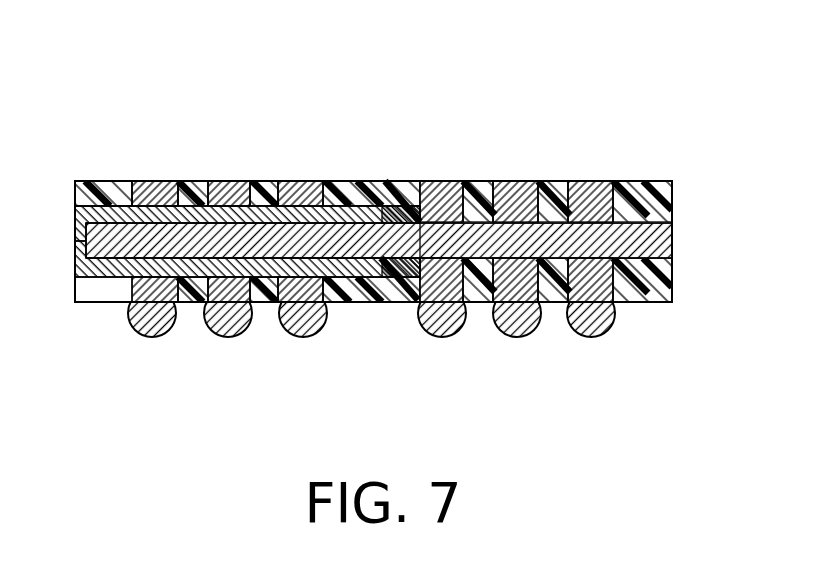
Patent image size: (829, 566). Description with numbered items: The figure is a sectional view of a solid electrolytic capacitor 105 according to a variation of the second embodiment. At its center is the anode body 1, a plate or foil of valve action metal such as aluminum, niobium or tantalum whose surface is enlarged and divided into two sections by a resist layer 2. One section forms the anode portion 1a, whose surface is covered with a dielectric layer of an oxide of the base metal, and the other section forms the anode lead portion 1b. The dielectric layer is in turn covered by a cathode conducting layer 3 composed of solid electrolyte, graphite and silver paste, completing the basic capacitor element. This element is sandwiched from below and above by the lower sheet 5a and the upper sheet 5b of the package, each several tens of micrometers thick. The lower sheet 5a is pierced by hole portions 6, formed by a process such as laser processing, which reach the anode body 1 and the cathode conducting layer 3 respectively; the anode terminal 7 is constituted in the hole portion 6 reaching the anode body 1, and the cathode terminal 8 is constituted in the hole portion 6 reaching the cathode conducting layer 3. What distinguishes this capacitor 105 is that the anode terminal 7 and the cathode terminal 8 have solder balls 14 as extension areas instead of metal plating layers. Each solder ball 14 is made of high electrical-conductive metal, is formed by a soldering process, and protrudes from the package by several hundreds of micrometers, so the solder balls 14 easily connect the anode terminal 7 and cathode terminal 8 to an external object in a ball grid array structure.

The solid electrolytic capacitor 105 is at (460, 107).
The anode body 1 is at (372, 238).
The anode portion 1a is at (107, 262).
The anode lead portion 1b is at (637, 240).
The resist layer 2 is at (413, 263).
The cathode conducting layer 3 is at (110, 181).
The lower sheet 5a is at (2, 241).
The upper sheet 5b is at (83, 195).
The hole portion 6 is at (333, 197).
The anode terminal 7 is at (592, 185).
The cathode terminal 8 is at (303, 181).
The solder ball 14 is at (150, 323).